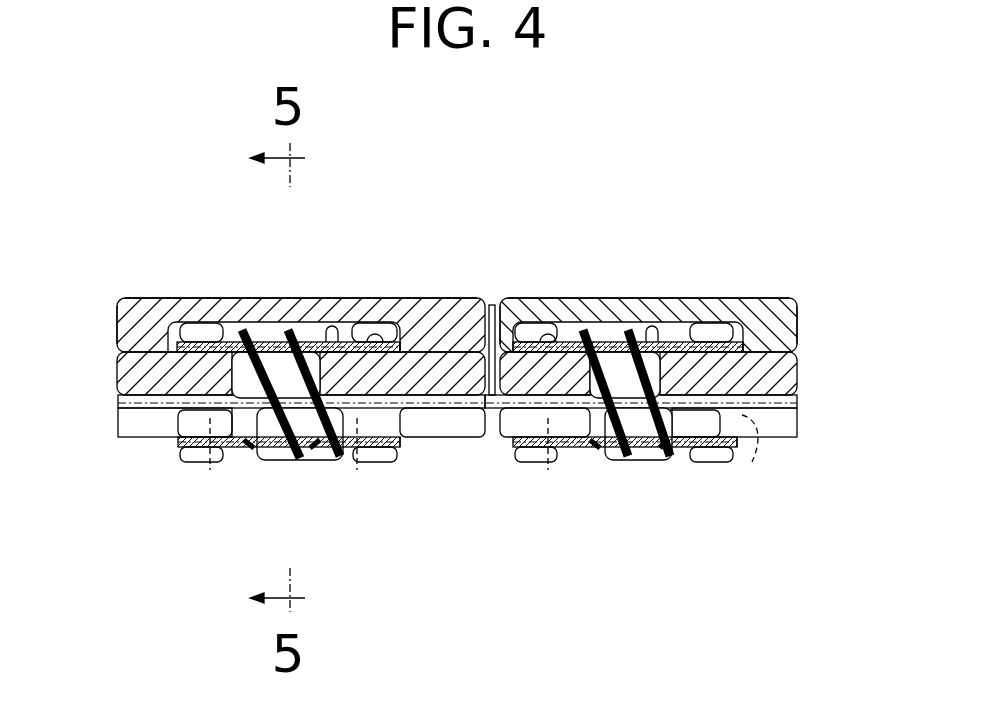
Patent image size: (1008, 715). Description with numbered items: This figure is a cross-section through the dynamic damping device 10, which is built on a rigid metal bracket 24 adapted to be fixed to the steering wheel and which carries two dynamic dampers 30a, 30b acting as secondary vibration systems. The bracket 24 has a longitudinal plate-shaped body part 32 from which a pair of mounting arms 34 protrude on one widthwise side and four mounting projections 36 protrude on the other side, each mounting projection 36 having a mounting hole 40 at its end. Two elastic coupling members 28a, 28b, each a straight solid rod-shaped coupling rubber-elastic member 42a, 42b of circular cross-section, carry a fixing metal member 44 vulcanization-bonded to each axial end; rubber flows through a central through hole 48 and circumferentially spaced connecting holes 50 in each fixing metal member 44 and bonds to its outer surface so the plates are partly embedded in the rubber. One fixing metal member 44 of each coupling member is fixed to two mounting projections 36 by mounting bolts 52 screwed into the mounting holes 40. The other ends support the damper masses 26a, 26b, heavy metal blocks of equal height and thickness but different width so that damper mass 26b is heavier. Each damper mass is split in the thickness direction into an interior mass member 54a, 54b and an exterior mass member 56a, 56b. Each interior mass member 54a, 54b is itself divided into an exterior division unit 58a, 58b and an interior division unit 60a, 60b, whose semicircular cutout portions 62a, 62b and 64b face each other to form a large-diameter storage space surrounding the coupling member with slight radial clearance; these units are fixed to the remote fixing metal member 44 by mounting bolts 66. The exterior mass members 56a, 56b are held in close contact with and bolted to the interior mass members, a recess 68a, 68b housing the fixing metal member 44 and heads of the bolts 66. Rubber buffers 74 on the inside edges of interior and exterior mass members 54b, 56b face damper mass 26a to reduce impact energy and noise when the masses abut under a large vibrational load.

The dynamic damping device 10 is at (760, 205).
The bracket 24 is at (786, 455).
The damper mass 26a is at (696, 290).
The damper mass 26b is at (206, 282).
The elastic coupling member 28a is at (612, 330).
The elastic coupling member 28b is at (297, 470).
The dynamic damper 30a is at (636, 270).
The dynamic damper 30b is at (146, 282).
The body part 32 is at (133, 430).
The mounting arm 34 is at (180, 402).
The mounting projection 36 is at (178, 440).
The mounting hole 40 is at (210, 465).
The coupling rubber-elastic member 42a is at (626, 447).
The coupling rubber-elastic member 42b is at (297, 340).
The fixing metal member 44 is at (430, 340).
The central through hole 48 is at (280, 335).
The connecting hole 50 is at (256, 330).
The mounting bolt 52 is at (200, 462).
The interior mass member 54a is at (820, 392).
The interior mass member 54b is at (110, 362).
The exterior mass member 56a is at (797, 303).
The exterior mass member 56b is at (124, 302).
The exterior division unit 58a is at (790, 390).
The exterior division unit 58b is at (116, 375).
The interior division unit 60a is at (512, 410).
The interior division unit 60b is at (452, 400).
The cutout portion 62a is at (713, 303).
The cutout portion 62b is at (227, 310).
The cutout portion 64b is at (378, 325).
The mounting bolt 66 is at (187, 303).
The recess 68a is at (652, 335).
The recess 68b is at (336, 330).
The rubber buffer 74 is at (491, 310).